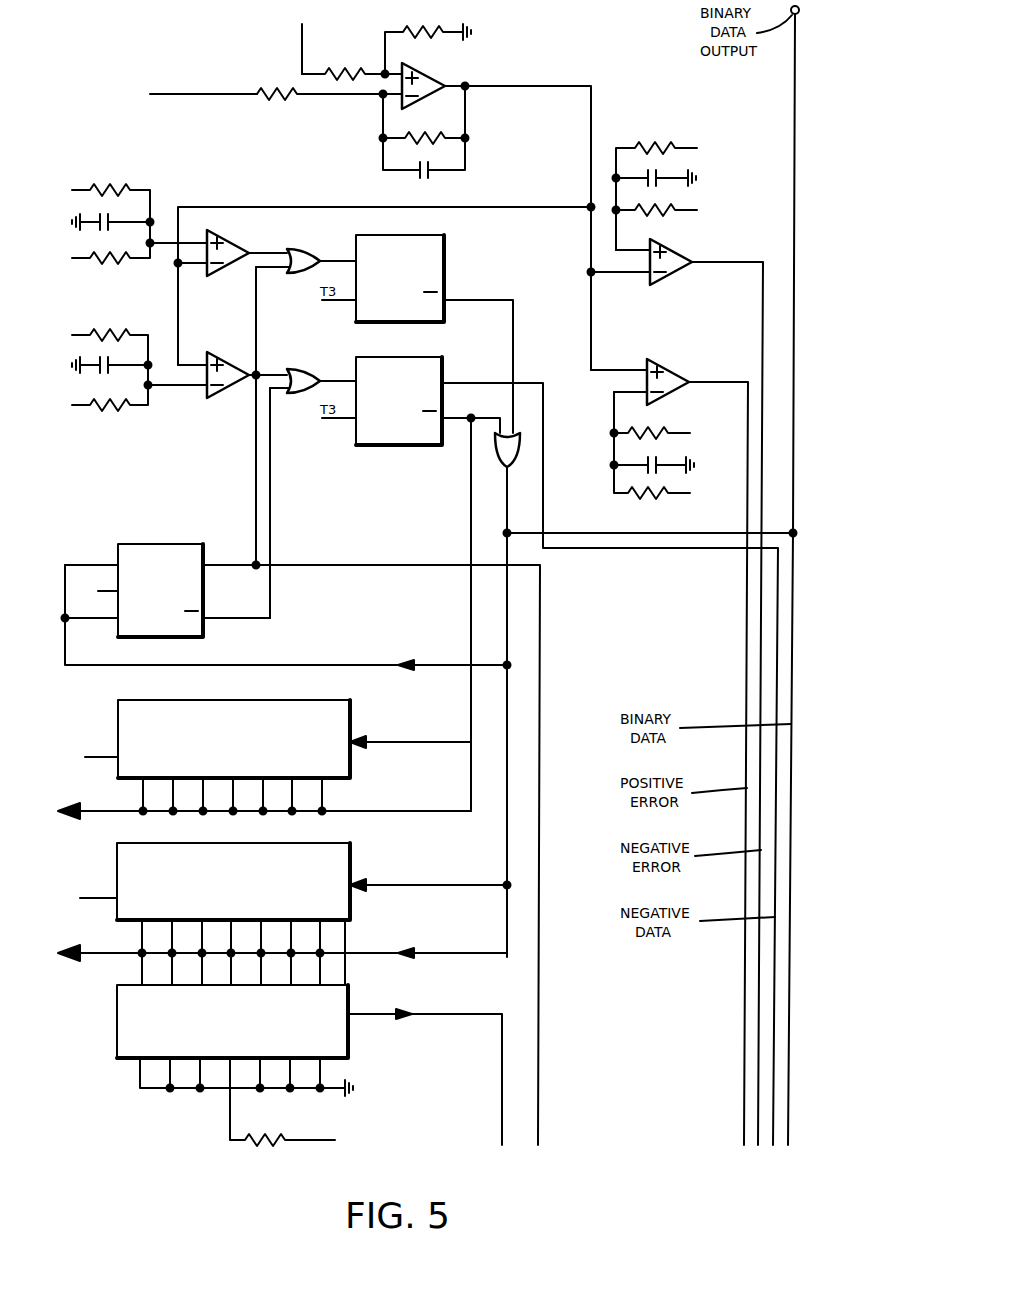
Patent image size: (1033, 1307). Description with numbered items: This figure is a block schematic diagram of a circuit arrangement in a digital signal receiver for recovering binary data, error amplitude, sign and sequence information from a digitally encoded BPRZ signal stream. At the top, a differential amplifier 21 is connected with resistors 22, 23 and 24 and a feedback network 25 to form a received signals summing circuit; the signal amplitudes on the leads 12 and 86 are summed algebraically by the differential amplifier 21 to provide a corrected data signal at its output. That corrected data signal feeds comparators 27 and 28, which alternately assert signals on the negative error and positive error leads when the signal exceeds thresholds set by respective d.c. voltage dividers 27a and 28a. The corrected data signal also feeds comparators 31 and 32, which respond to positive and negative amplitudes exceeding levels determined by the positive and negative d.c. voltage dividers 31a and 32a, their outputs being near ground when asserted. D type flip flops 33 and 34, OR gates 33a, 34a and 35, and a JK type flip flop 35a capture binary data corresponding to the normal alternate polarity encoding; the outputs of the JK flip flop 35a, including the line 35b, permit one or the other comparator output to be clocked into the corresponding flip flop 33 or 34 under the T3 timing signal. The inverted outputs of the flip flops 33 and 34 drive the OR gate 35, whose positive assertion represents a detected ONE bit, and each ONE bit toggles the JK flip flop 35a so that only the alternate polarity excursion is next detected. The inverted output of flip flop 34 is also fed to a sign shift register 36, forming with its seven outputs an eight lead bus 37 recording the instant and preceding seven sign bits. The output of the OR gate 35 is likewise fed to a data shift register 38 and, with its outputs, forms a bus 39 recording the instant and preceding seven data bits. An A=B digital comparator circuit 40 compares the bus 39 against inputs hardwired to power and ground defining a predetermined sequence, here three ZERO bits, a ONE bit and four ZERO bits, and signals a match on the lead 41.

The lead 12 is at (303, 38).
The differential amplifier 21 is at (418, 70).
The resistor 22 is at (347, 74).
The resistor 23 is at (252, 92).
The resistor 24 is at (418, 30).
The feedback network 25 is at (452, 156).
The comparator 27 is at (672, 278).
The d.c. voltage divider 27a is at (678, 161).
The comparator 28 is at (672, 367).
The d.c. voltage divider 28a is at (678, 451).
The comparator 31 is at (232, 238).
The positive d.c. voltage divider 31a is at (124, 204).
The comparator 32 is at (226, 352).
The negative d.c. voltage divider 32a is at (128, 382).
The D type flip flop 33 is at (444, 253).
The OR gate 33a is at (303, 249).
The D type flip flop 34 is at (442, 371).
The OR gate 34a is at (303, 369).
The OR gate 35 is at (520, 453).
The JK type flip flop 35a is at (180, 544).
The output line 35b is at (392, 564).
The sign shift register 36 is at (283, 700).
The eight lead bus 37 is at (245, 812).
The data shift register 38 is at (350, 853).
The bus 39 is at (90, 958).
The A=B digital comparator circuit 40 is at (117, 1027).
The lead 41 is at (502, 1074).
The lead 86 is at (190, 92).